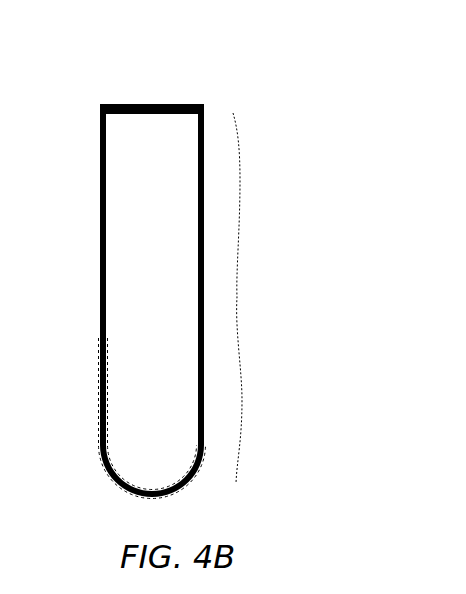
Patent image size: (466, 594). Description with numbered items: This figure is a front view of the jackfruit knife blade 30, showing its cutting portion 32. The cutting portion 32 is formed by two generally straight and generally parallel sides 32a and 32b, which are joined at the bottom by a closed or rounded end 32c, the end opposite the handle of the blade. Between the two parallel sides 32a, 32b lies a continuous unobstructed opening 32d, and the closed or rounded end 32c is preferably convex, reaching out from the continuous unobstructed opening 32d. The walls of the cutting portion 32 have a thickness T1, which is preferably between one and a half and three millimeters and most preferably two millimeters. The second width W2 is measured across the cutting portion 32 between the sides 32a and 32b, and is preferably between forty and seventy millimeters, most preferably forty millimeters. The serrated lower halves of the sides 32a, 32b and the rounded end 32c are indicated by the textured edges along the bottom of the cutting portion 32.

The jackfruit knife blade 30 is at (74, 118).
The cutting portion 32 is at (237, 297).
The side 32a is at (100, 262).
The side 32b is at (198, 262).
The closed or rounded end 32c is at (152, 491).
The continuous unobstructed opening 32d is at (165, 320).
The thickness T1 is at (107, 243).
The second width W2 is at (103, 465).